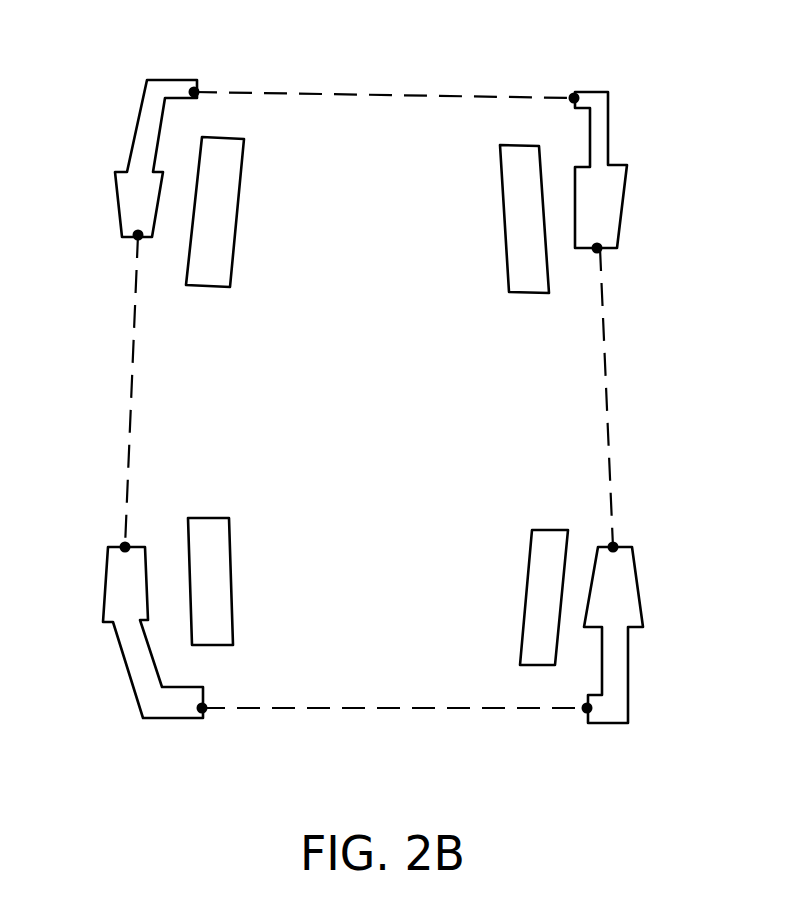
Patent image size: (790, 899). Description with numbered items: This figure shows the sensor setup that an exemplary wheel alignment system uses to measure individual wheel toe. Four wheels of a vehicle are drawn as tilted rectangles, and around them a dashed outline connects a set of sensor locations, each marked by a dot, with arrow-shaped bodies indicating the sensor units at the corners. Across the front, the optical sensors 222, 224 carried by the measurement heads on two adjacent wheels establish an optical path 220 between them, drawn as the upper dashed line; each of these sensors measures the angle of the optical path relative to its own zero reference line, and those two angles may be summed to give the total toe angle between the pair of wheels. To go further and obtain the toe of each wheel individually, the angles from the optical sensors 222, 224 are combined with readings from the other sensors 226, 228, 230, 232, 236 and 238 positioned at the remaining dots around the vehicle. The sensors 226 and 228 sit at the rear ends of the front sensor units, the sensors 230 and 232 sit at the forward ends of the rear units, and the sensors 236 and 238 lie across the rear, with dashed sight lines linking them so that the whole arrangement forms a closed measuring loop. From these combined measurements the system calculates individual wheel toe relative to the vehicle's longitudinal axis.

The optical path 220 is at (362, 93).
The optical sensor 222 is at (196, 90).
The optical sensor 224 is at (574, 96).
The sensor 226 is at (136, 238).
The sensor 228 is at (600, 250).
The sensor 230 is at (123, 546).
The sensor 232 is at (615, 546).
The sensor 236 is at (203, 711).
The sensor 238 is at (586, 710).